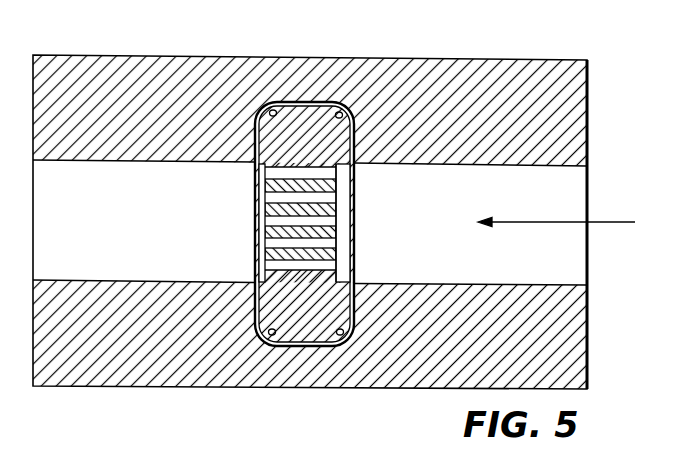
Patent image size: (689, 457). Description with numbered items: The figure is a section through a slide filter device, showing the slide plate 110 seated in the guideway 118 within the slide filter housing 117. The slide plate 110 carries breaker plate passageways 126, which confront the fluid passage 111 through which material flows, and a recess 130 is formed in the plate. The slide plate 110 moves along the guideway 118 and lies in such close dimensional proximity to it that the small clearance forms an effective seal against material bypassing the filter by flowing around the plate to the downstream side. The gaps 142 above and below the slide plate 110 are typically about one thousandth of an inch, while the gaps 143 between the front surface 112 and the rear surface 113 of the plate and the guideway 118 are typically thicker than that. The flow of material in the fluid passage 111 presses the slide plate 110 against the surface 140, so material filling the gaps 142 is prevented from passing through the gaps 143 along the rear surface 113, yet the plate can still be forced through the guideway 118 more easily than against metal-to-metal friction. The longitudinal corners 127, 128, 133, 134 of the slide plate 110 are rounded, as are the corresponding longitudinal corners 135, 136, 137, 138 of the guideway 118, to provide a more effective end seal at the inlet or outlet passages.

The slide plate 110 is at (275, 305).
The fluid passage 111 is at (580, 267).
The front surface 112 is at (337, 248).
The rear surface 113 is at (265, 248).
The slide filter housing 117 is at (79, 64).
The guideway 118 is at (317, 102).
The breaker plate passageways 126 is at (265, 246).
The longitudinal corner of slide plate 127 is at (282, 103).
The longitudinal corner of slide plate 128 is at (338, 103).
The recess 130 is at (345, 223).
The longitudinal corner of slide plate 133 is at (283, 348).
The longitudinal corner of slide plate 134 is at (329, 348).
The longitudinal corner of guideway 135 is at (265, 108).
The longitudinal corner of guideway 136 is at (350, 112).
The longitudinal corner of guideway 137 is at (262, 345).
The longitudinal corner of guideway 138 is at (345, 337).
The surface 140 is at (254, 140).
The gaps 142 is at (303, 102).
The gaps 143 is at (256, 168).